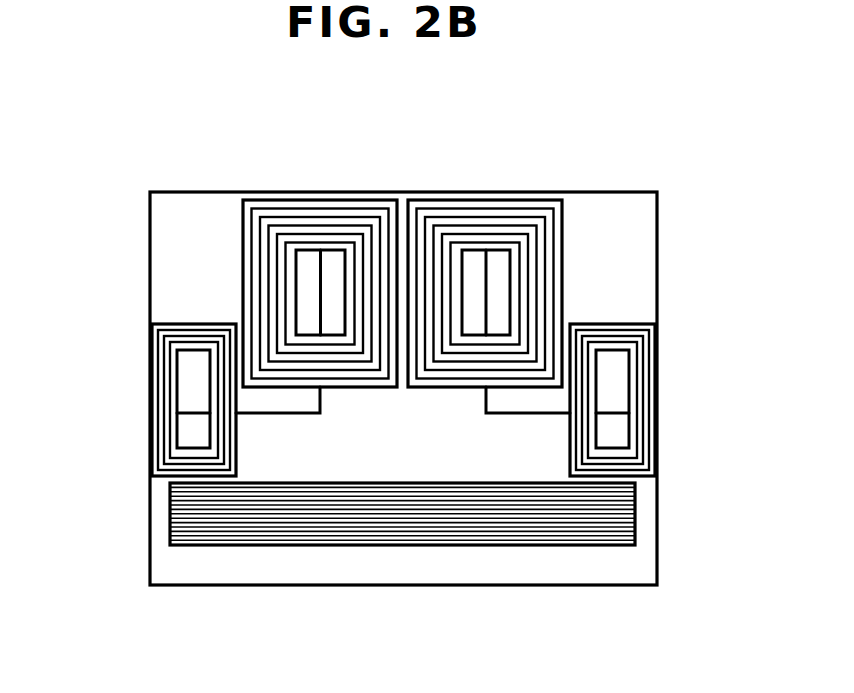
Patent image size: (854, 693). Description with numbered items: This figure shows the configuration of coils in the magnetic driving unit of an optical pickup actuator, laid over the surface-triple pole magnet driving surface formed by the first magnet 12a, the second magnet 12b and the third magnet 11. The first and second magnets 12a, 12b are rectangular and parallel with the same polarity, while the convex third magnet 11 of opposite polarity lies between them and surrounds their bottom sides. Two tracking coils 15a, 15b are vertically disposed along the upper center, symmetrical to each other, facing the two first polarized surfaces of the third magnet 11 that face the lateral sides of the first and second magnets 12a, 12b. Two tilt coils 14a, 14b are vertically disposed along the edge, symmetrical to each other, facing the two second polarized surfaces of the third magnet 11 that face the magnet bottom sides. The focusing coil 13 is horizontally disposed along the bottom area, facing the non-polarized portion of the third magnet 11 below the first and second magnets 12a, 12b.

The third magnet 11 is at (628, 567).
The first magnet 12a is at (172, 244).
The second magnet 12b is at (634, 244).
The focusing coil 13 is at (628, 517).
The tilt coil 14a is at (166, 335).
The tilt coil 14b is at (640, 335).
The tracking coil 15a is at (268, 283).
The tracking coil 15b is at (538, 283).